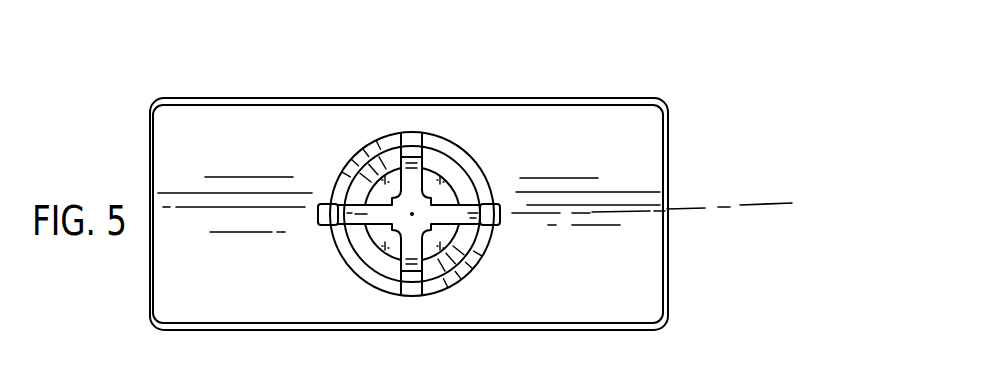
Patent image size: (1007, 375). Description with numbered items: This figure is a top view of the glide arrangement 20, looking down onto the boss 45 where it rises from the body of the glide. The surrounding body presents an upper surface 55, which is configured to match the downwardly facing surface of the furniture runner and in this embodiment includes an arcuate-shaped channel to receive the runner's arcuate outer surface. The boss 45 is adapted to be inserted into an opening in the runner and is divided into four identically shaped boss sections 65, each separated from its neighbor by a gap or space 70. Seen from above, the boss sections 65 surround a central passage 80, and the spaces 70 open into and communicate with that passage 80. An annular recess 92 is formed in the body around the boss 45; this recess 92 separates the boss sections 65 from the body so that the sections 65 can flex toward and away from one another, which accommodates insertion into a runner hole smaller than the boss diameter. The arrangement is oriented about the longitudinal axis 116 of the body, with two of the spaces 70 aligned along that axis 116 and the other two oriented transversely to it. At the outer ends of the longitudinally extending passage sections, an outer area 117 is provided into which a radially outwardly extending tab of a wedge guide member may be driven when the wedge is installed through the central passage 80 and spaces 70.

The glide arrangement 20 is at (658, 92).
The boss 45 is at (465, 145).
The upper surface 55 is at (571, 151).
The boss sections 65 is at (384, 150).
The spaces 70 is at (410, 140).
The central passage 80 is at (420, 218).
The annular recess 92 is at (378, 283).
The longitudinal axis 116 is at (758, 202).
The outer area 117 is at (326, 206).